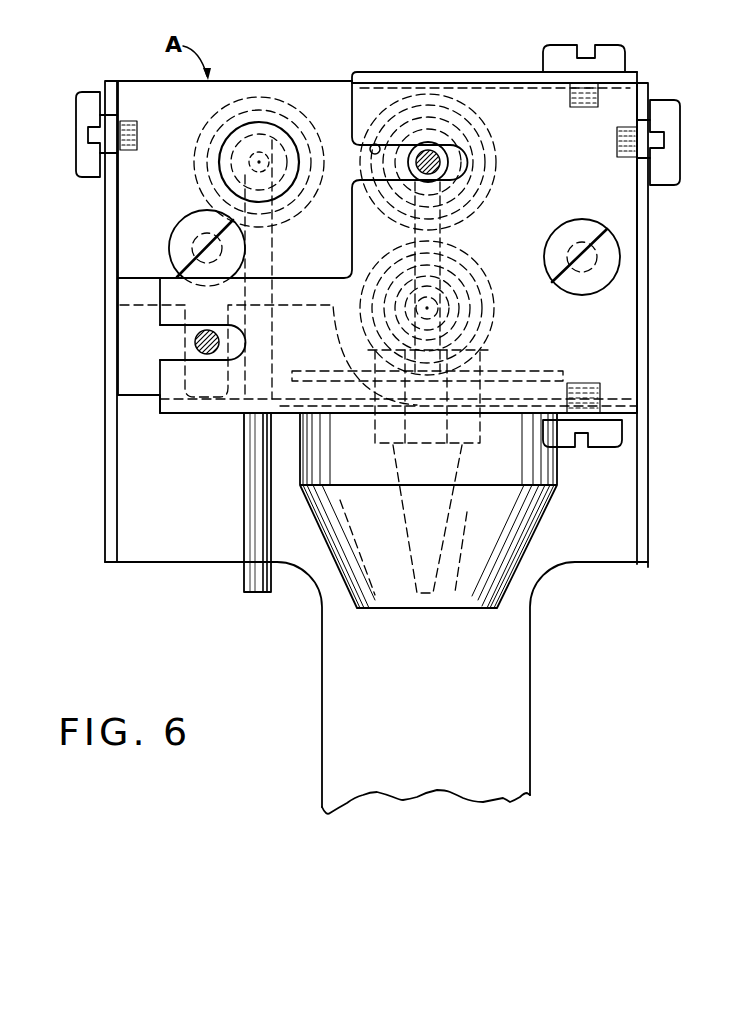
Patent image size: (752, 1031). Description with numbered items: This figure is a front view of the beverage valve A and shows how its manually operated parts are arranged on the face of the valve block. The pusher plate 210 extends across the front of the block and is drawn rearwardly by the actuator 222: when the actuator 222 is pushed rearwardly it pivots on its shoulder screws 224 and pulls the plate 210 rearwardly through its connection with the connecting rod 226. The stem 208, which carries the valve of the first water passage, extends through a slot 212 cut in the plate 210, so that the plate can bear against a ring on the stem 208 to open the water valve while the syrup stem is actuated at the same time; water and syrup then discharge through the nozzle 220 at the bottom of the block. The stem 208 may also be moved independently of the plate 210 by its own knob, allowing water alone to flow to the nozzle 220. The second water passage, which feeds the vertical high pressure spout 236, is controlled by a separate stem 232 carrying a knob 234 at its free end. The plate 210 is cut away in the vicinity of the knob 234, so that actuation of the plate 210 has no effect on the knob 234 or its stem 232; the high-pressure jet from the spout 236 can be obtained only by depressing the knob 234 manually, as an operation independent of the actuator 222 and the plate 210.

The stem 208 is at (443, 163).
The pusher plate 210 is at (510, 103).
The slot 212 is at (384, 142).
The nozzle 220 is at (388, 596).
The actuator 222 is at (448, 724).
The shoulder screws 224 is at (79, 113).
The connecting rod 226 is at (193, 346).
The stem 232 is at (260, 128).
The knob 234 is at (276, 122).
The vertical high pressure spout 236 is at (244, 505).